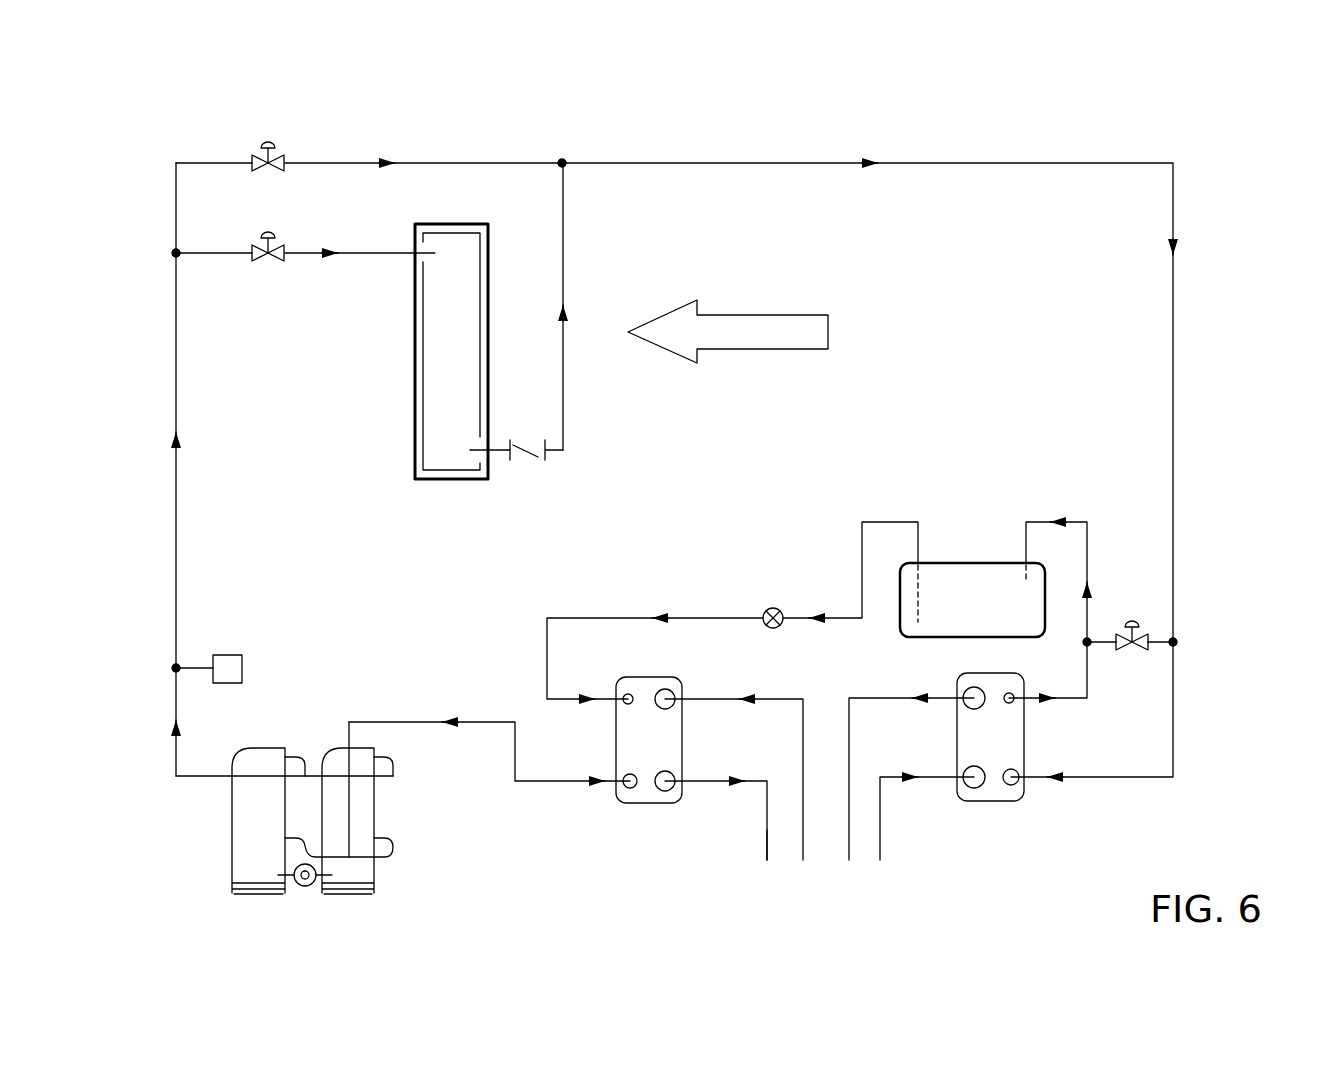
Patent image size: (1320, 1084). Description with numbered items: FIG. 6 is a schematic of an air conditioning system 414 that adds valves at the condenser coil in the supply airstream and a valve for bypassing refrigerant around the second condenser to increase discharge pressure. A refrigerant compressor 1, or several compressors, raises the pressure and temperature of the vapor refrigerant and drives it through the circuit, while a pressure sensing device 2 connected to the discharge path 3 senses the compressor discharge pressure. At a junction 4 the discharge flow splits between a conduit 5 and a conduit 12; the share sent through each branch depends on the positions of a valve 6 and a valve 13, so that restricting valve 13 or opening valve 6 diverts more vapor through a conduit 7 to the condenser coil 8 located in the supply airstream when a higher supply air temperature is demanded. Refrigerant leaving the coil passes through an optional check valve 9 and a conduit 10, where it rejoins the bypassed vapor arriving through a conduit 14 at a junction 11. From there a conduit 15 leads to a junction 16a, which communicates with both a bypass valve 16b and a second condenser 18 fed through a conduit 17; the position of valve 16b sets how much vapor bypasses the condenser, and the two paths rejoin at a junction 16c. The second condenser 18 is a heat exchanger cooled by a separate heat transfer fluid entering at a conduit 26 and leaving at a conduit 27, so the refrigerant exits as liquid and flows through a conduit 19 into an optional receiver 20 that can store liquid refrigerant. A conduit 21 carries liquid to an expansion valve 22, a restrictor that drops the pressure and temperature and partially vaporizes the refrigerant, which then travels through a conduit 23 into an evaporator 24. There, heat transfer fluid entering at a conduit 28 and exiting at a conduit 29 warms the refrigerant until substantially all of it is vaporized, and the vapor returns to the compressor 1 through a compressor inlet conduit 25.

The refrigerant compressor 1 is at (253, 744).
The pressure sensing device 2 is at (231, 652).
The discharge path 3 is at (180, 397).
The junction 4 is at (170, 248).
The conduit 5 is at (206, 248).
The valve 6 is at (288, 264).
The line to condenser 7 is at (384, 248).
The condenser coil 8 is at (452, 222).
The check valve 9 is at (526, 466).
The conduit 10 is at (567, 258).
The junction 11 is at (568, 158).
The conduit 12 is at (212, 159).
The valve 13 is at (290, 154).
The conduit 14 is at (448, 159).
The conduit 15 is at (1000, 158).
The junction 16a is at (1176, 634).
The valve 16b is at (1124, 658).
The junction 16c is at (1092, 634).
The conduit 17 is at (1178, 762).
The second condenser 18 is at (1037, 758).
The conduit 19 is at (1084, 514).
The receiver 20 is at (966, 558).
The conduit 21 is at (897, 515).
The valve 22 is at (786, 598).
The conduit 23 is at (591, 612).
The evaporator 24 is at (686, 760).
The compressor inlet conduit 25 is at (411, 728).
The conduit 26 is at (886, 829).
The conduit 27 is at (895, 693).
The conduit 28 is at (698, 692).
The conduit 29 is at (762, 834).
The refrigeration system 414 is at (1186, 126).